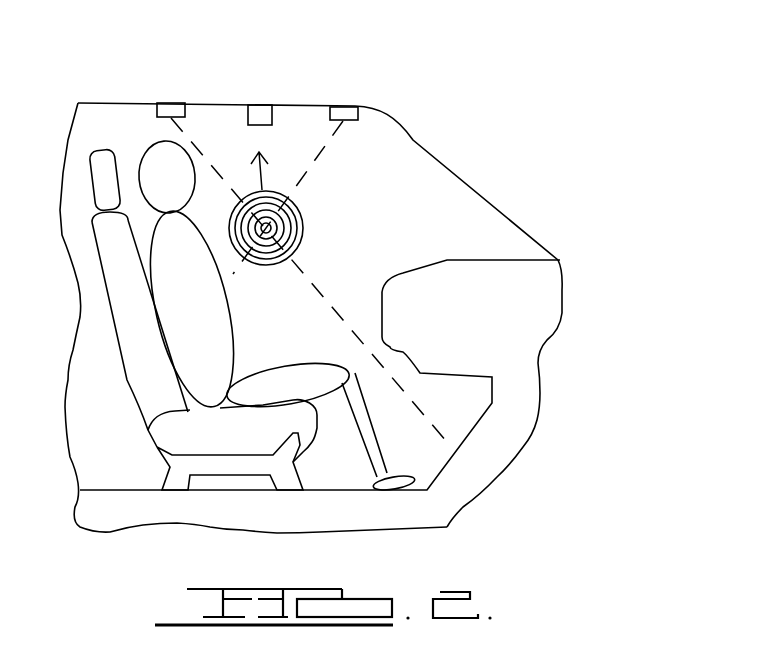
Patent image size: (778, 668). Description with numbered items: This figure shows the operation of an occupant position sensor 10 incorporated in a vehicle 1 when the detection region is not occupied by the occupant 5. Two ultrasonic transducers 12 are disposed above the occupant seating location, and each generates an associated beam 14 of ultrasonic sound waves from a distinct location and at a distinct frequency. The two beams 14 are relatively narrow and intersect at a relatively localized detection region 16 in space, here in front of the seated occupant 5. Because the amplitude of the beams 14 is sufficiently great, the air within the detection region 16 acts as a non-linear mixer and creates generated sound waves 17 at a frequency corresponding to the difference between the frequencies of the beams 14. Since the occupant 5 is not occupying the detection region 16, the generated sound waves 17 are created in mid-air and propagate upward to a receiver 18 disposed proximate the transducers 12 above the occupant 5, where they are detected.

The vehicle 1 is at (562, 313).
The occupant 5 is at (155, 157).
The occupant position sensor 10 is at (505, 155).
The ultrasonic transducer 12 is at (167, 108).
The beam of ultrasonic sound waves 14 is at (332, 312).
The detection region 16 is at (336, 240).
The generated sound waves 17 is at (303, 215).
The receiver 18 is at (259, 111).